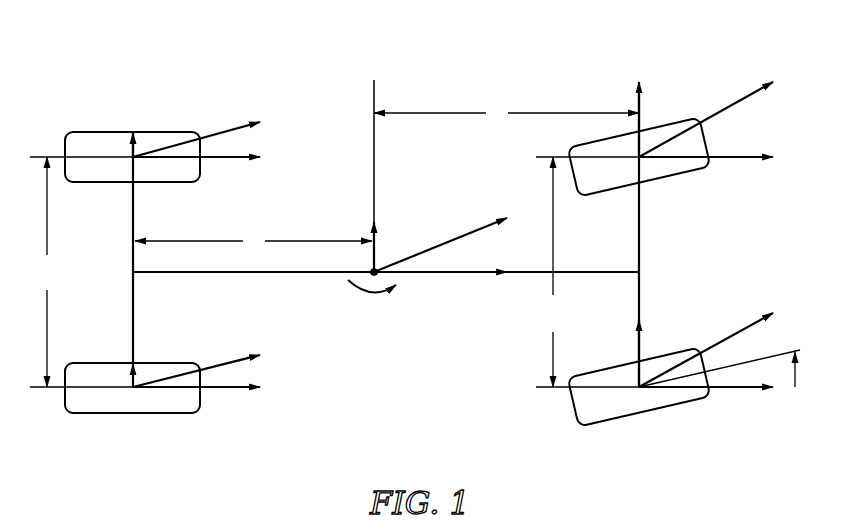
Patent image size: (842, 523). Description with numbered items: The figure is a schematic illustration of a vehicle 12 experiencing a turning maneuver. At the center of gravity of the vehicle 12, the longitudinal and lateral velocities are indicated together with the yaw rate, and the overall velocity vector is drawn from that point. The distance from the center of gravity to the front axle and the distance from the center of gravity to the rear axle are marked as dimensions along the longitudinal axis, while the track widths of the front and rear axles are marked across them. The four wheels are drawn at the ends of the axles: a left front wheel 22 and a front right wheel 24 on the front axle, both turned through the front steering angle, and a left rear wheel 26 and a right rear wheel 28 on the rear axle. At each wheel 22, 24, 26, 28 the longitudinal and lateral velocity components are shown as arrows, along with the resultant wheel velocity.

The vehicle 12 is at (348, 74).
The left front wheel 22 is at (662, 167).
The front right wheel 24 is at (635, 405).
The left rear wheel 26 is at (85, 133).
The right rear wheel 28 is at (102, 402).